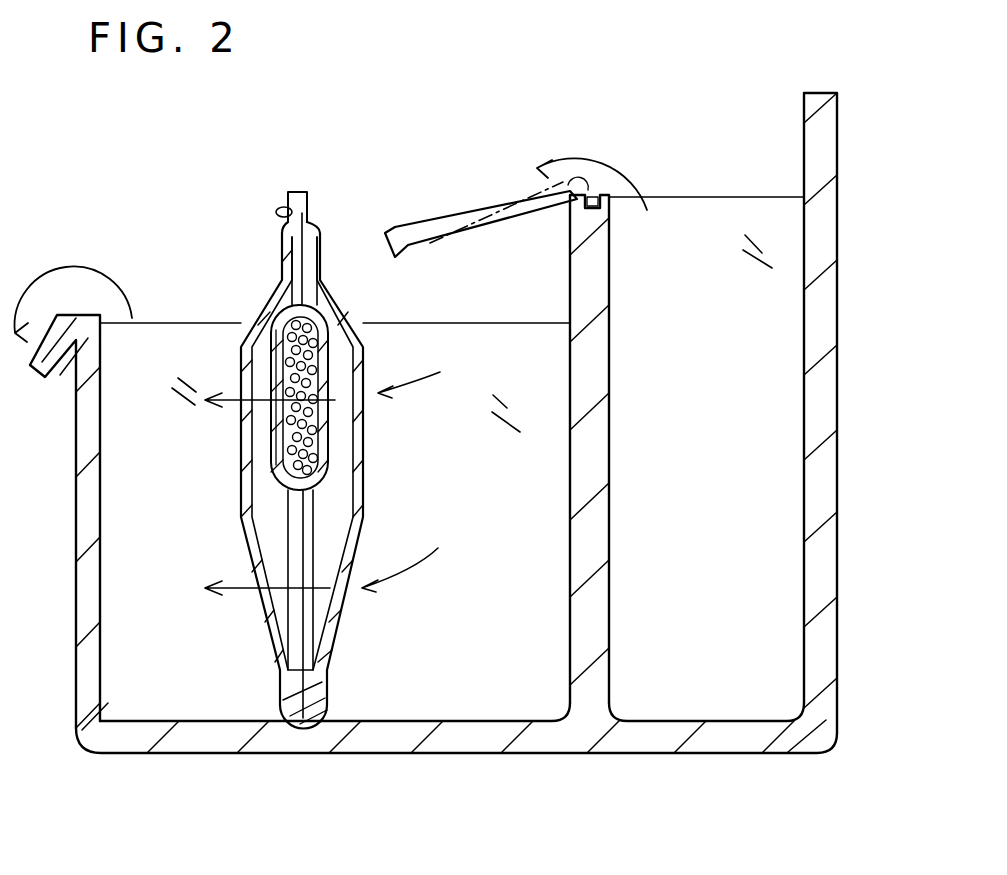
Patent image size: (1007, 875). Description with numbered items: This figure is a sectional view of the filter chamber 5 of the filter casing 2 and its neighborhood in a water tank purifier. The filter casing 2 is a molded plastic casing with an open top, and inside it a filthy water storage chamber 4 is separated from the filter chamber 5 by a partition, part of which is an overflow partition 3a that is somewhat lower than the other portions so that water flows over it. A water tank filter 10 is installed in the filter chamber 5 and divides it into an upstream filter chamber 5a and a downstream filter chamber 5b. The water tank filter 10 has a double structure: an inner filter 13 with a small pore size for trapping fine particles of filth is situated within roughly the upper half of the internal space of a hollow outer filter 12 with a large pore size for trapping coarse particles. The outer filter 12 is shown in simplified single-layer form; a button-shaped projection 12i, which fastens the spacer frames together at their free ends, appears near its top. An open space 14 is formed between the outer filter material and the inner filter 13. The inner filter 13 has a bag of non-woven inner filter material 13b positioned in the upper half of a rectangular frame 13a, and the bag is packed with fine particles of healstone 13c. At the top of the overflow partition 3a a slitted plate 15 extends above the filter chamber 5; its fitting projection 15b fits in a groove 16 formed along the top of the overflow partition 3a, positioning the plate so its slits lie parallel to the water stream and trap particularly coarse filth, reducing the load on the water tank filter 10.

The filter casing 2 is at (360, 750).
The overflow partition 3a is at (612, 463).
The filthy water storage chamber 4 is at (805, 400).
The filter chamber 5 is at (100, 596).
The upstream filter chamber 5a is at (487, 340).
The downstream filter chamber 5b is at (160, 345).
The water tank filter 10 is at (316, 178).
The outer filter 12 is at (360, 547).
The button-shaped projection 12i is at (280, 212).
The inner filter 13 is at (340, 460).
The rectangular frame 13a is at (292, 305).
The inner filter material 13b is at (330, 357).
The healstone 13c is at (283, 456).
The open space 14 is at (335, 503).
The slitted plate 15 is at (480, 205).
The fitting projection 15b is at (600, 193).
The groove 16 is at (598, 210).